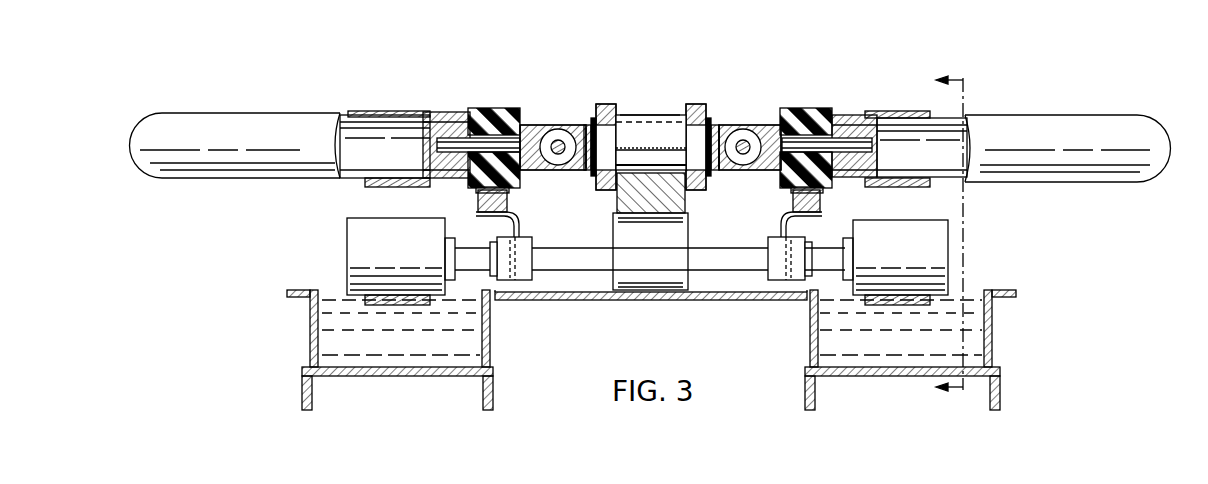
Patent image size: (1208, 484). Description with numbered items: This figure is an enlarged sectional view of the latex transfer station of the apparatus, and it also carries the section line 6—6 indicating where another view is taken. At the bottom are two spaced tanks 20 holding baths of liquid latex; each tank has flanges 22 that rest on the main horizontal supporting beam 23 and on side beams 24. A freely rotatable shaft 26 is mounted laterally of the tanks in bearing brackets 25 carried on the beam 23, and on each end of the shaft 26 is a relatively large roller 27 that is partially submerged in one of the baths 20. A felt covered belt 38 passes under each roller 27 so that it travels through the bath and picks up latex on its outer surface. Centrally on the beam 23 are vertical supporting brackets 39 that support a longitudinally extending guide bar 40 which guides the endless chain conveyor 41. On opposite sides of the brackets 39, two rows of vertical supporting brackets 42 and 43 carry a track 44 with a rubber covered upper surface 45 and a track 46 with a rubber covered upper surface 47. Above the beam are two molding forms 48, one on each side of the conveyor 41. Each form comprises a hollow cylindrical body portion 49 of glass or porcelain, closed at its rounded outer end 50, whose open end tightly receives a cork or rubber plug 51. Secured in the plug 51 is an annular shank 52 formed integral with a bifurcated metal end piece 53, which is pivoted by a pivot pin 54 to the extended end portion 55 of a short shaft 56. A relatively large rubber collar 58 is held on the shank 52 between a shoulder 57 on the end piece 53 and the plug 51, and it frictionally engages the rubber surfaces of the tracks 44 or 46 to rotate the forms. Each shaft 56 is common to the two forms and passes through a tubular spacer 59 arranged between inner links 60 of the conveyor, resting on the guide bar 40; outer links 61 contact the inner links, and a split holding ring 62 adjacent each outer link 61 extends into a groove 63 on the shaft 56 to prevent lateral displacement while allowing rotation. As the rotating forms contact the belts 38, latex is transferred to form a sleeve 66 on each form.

The section line 6- 6 is at (947, 236).
The tank 20 is at (440, 360).
The flange 22 is at (314, 290).
The main horizontal supporting beam 23 is at (745, 300).
The side beam 24 is at (310, 310).
The bearing bracket 25 is at (525, 283).
The shaft 26 is at (585, 265).
The roller 27 is at (355, 240).
The belt 38 is at (415, 305).
The vertical supporting bracket 39 is at (628, 233).
The guide bar 40 is at (678, 203).
The endless chain conveyor 41 is at (650, 114).
The supporting bracket 42 is at (790, 236).
The supporting bracket 43 is at (516, 224).
The track 44 is at (818, 204).
The rubber covered upper surface 45 is at (792, 191).
The track 46 is at (510, 200).
The rubber covered upper surface 47 is at (478, 191).
The molding form 48 is at (447, 112).
The hollow cylindrical body portion 49 is at (352, 116).
The rounded outer end 50 is at (150, 125).
The plug 51 is at (428, 130).
The annular shank 52 is at (462, 138).
The metal end piece 53 is at (533, 130).
The pivot pin 54 is at (558, 140).
The extended end portion 55 is at (586, 126).
The short shaft 56 is at (663, 130).
The shoulder 57 is at (523, 126).
The rubber collar 58 is at (476, 110).
The tubular spacer 59 is at (630, 118).
The inner link 60 is at (608, 104).
The outer link 61 is at (604, 104).
The split holding ring 62 is at (593, 172).
The groove 63 is at (576, 165).
The sleeve 66 is at (395, 112).